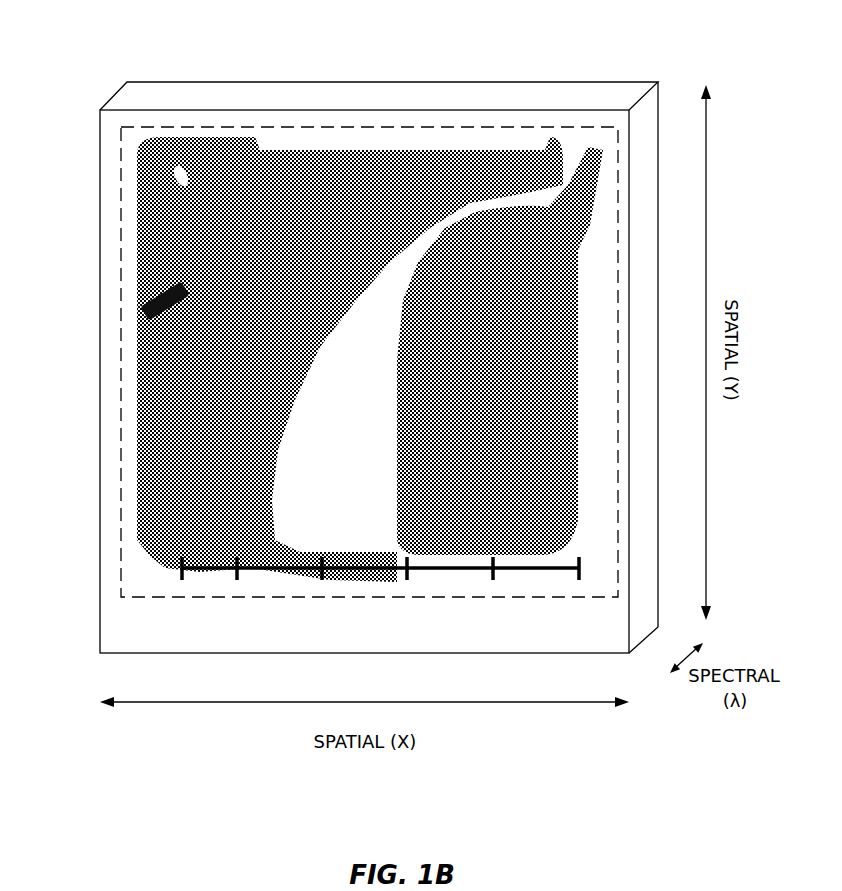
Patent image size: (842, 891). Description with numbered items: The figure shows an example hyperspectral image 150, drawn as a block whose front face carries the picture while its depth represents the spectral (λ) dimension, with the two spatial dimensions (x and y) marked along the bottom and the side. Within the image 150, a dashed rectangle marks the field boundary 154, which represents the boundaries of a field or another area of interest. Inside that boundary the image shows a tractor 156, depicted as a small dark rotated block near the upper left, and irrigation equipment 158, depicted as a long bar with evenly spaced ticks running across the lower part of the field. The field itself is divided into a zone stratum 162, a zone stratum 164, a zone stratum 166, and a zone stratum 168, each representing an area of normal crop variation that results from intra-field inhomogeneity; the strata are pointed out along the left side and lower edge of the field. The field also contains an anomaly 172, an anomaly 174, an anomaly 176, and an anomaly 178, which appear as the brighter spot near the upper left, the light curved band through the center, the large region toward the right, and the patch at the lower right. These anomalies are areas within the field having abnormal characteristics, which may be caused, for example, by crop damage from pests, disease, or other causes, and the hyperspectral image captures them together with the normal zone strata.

The hyperspectral image 150 is at (78, 64).
The field boundary 154 is at (590, 126).
The tractor 156 is at (140, 302).
The irrigation equipment 158 is at (407, 580).
The zone stratum 162 is at (137, 434).
The zone stratum 164 is at (140, 533).
The zone stratum 166 is at (181, 580).
The zone stratum 168 is at (258, 580).
The anomaly 172 is at (165, 170).
The anomaly 174 is at (437, 254).
The anomaly 176 is at (497, 429).
The anomaly 178 is at (596, 542).